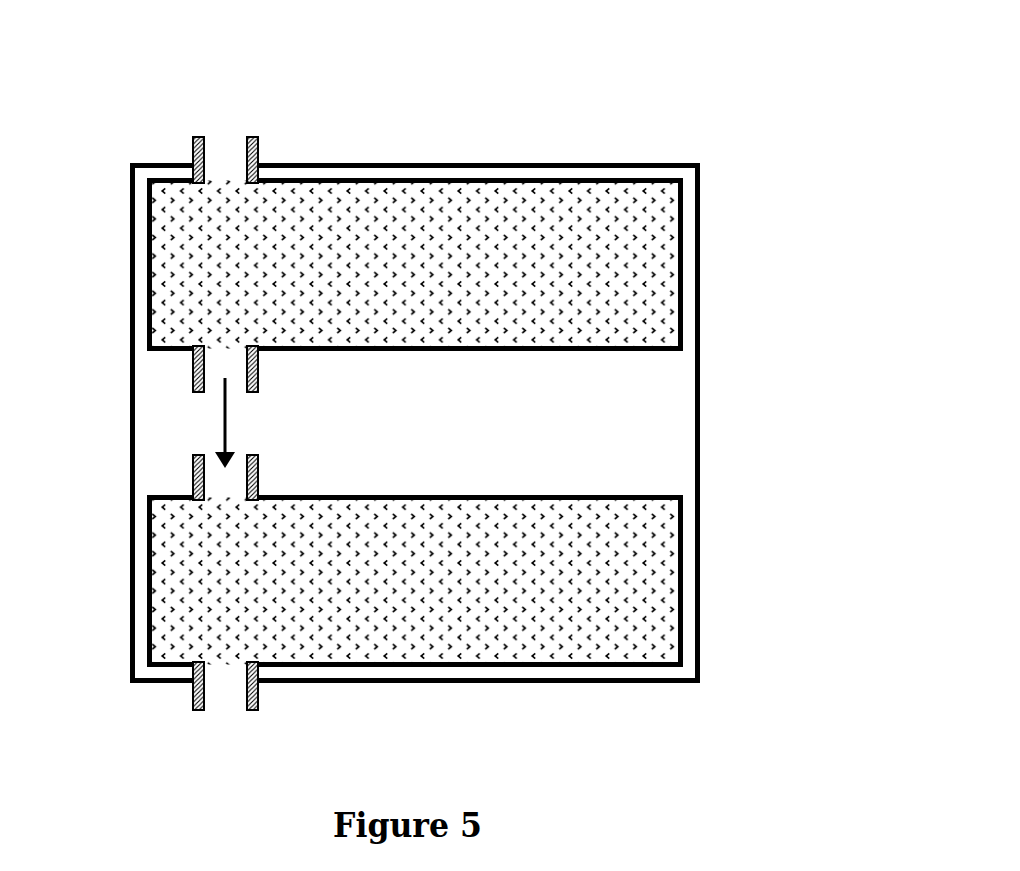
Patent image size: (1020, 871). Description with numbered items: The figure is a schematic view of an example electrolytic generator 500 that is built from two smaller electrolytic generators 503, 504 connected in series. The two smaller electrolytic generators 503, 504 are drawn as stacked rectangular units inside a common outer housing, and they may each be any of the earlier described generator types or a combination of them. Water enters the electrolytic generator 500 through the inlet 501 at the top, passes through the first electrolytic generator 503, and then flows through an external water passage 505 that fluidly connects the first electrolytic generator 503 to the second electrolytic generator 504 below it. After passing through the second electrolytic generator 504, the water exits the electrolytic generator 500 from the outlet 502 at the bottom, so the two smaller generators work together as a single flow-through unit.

The electrolytic generator 500 is at (577, 95).
The inlet 501 is at (221, 141).
The outlet 502 is at (226, 697).
The electrolytic generator 503 is at (440, 276).
The electrolytic generator 504 is at (440, 594).
The external water passage 505 is at (225, 425).